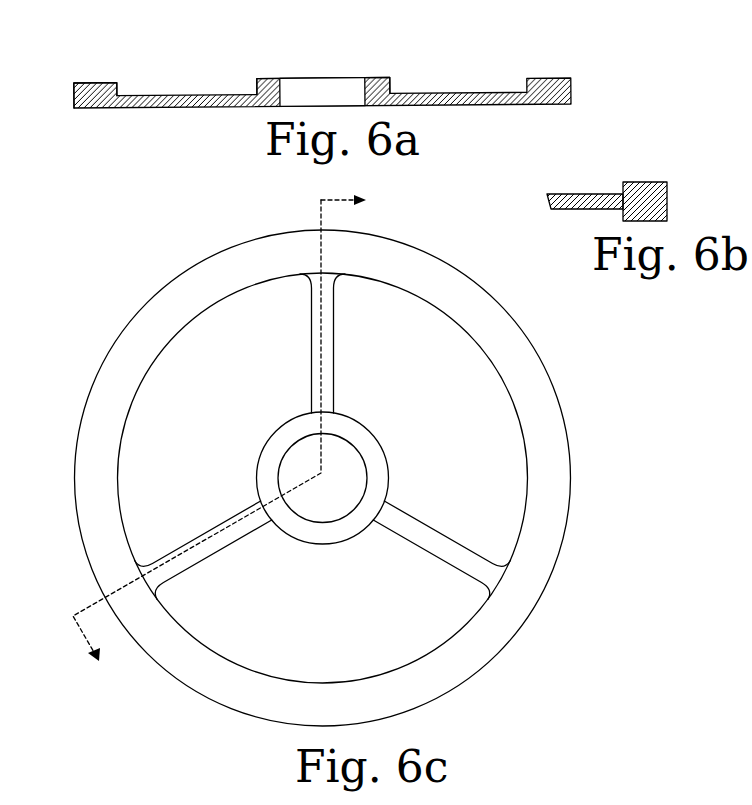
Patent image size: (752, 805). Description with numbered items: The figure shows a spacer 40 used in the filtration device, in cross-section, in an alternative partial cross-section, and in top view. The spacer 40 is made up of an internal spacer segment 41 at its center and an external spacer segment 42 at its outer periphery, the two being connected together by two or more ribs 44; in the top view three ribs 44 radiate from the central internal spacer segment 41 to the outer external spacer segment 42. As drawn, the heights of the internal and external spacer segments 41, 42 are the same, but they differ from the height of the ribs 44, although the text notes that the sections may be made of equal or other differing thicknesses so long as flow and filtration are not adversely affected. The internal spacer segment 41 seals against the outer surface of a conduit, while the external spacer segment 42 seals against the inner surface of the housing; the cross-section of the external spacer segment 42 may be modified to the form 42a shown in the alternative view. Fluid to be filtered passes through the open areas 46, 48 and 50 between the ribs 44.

In FIG. 6A, the spacer 40 is at (566, 58).
In FIG. 6C, the spacer 40 is at (598, 433).
In FIG. 6A, the internal spacer segment 41 is at (268, 80).
In FIG. 6C, the internal spacer segment 41 is at (354, 430).
In FIG. 6A, the external spacer segment 42 is at (107, 83).
In FIG. 6B, the modified external spacer segment 42a is at (648, 200).
In FIG. 6A, the ribs 44 is at (444, 93).
In FIG. 6C, the ribs 44 is at (324, 356).
In FIG. 6C, the flow area 46 is at (197, 384).
In FIG. 6C, the flow area 48 is at (486, 429).
In FIG. 6C, the flow area 50 is at (311, 609).